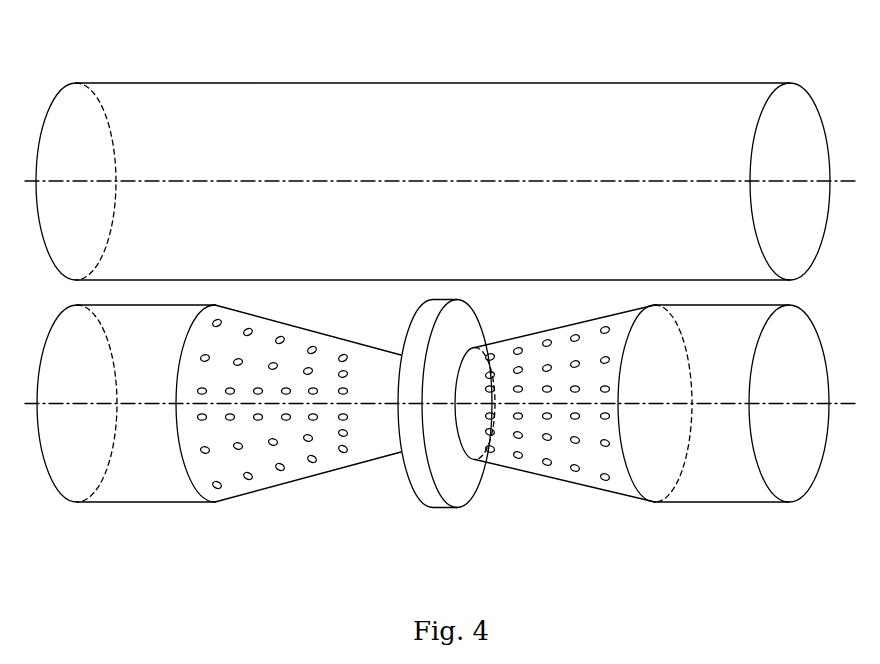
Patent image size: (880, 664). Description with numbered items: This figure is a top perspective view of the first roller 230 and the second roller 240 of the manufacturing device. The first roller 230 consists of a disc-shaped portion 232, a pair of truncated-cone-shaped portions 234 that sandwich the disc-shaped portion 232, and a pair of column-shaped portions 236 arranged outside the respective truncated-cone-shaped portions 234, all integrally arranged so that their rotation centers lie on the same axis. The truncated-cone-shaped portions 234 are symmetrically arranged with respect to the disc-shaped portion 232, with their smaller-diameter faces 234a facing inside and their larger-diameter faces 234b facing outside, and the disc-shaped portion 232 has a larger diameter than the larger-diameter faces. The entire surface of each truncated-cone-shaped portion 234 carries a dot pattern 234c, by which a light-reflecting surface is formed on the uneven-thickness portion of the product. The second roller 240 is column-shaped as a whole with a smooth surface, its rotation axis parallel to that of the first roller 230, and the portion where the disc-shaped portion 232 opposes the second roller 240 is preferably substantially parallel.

The first roller 230 is at (765, 582).
The disc-shaped portion 232 is at (443, 508).
The truncated-cone-shaped portion 234 is at (447, 413).
The smaller-diameter face 234a is at (473, 425).
The larger-diameter face 234b is at (665, 382).
The dot pattern 234c is at (547, 466).
The column-shaped portion 236 is at (150, 492).
The second roller 240 is at (738, 66).